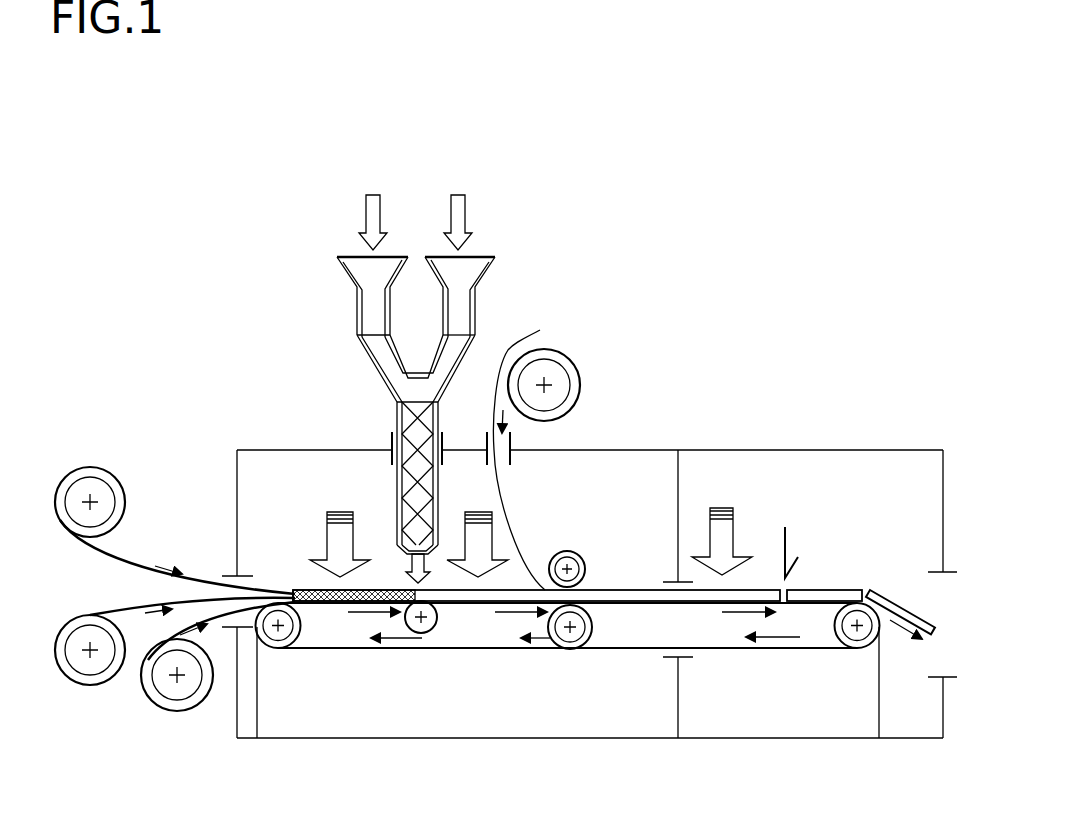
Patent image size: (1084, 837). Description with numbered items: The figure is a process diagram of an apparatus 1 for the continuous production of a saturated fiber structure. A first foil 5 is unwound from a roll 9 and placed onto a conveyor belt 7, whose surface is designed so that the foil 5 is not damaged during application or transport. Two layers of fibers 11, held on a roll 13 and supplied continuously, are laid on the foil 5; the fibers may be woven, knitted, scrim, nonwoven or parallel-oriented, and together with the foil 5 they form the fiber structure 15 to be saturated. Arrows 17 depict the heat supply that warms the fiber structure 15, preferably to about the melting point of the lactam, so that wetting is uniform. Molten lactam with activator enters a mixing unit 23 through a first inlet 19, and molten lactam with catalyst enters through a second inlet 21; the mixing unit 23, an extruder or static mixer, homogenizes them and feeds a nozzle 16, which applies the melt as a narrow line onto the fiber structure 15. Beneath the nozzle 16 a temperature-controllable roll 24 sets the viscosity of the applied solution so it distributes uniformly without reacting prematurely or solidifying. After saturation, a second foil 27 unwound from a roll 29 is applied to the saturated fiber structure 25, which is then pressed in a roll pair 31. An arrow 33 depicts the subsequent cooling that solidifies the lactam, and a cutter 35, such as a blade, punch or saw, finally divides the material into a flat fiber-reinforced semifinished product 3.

The apparatus 1 is at (712, 338).
The flat fiber-reinforced semifinished product 3 is at (905, 605).
The first foil 5 is at (150, 657).
The conveyor belt 7 is at (380, 650).
The roll 9 is at (187, 693).
The fibers 11 is at (110, 608).
The roll 13 is at (80, 490).
The fiber structure 15 is at (307, 590).
The nozzle 16 is at (400, 568).
The arrows 17 is at (334, 540).
The first inlet 19 is at (360, 267).
The second inlet 21 is at (472, 268).
The mixing unit 23 is at (397, 417).
The temperature-controllable roll 24 is at (433, 633).
The saturated fiber structure 25 is at (646, 589).
The second foil 27 is at (540, 330).
The roll 29 is at (558, 380).
The roll pair 31 is at (597, 620).
The arrow 33 is at (730, 545).
The cutter 35 is at (788, 542).